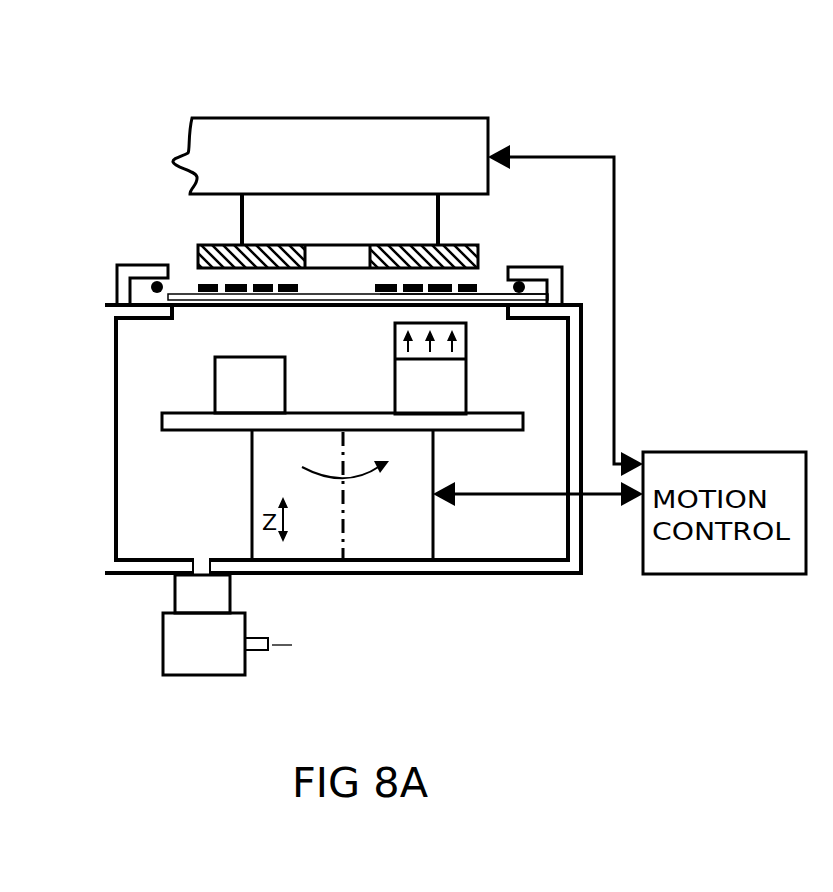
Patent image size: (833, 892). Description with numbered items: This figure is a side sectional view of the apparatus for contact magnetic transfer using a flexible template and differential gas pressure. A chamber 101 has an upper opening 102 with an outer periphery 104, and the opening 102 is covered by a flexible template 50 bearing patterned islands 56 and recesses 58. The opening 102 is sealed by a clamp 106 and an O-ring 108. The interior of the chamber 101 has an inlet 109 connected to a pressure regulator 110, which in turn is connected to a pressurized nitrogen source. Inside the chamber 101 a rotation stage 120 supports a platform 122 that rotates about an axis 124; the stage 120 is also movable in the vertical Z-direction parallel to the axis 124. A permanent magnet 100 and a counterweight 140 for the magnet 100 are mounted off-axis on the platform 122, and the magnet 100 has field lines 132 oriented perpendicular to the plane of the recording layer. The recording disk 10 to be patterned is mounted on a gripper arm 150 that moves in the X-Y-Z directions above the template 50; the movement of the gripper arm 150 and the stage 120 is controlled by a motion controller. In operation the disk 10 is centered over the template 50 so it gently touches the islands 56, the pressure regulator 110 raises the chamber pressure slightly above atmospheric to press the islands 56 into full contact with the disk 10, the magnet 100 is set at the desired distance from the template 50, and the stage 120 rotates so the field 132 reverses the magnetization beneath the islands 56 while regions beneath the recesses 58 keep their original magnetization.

The recording disk 10 is at (478, 262).
The flexible template 50 is at (190, 288).
The patterned islands 56 is at (477, 288).
The recesses 58 is at (393, 287).
The permanent magnet 100 is at (457, 372).
The chamber 101 is at (103, 523).
The upper opening 102 is at (190, 322).
The outer periphery 104 is at (178, 320).
The clamp 106 is at (125, 263).
The O-ring 108 is at (545, 290).
The inlet 109 is at (203, 558).
The pressure regulator 110 is at (192, 660).
The rotation stage 120 is at (270, 458).
The platform 122 is at (215, 427).
The axis 124 is at (343, 518).
The field lines 132 is at (466, 333).
The counterweight 140 is at (285, 367).
The gripper arm 150 is at (345, 117).